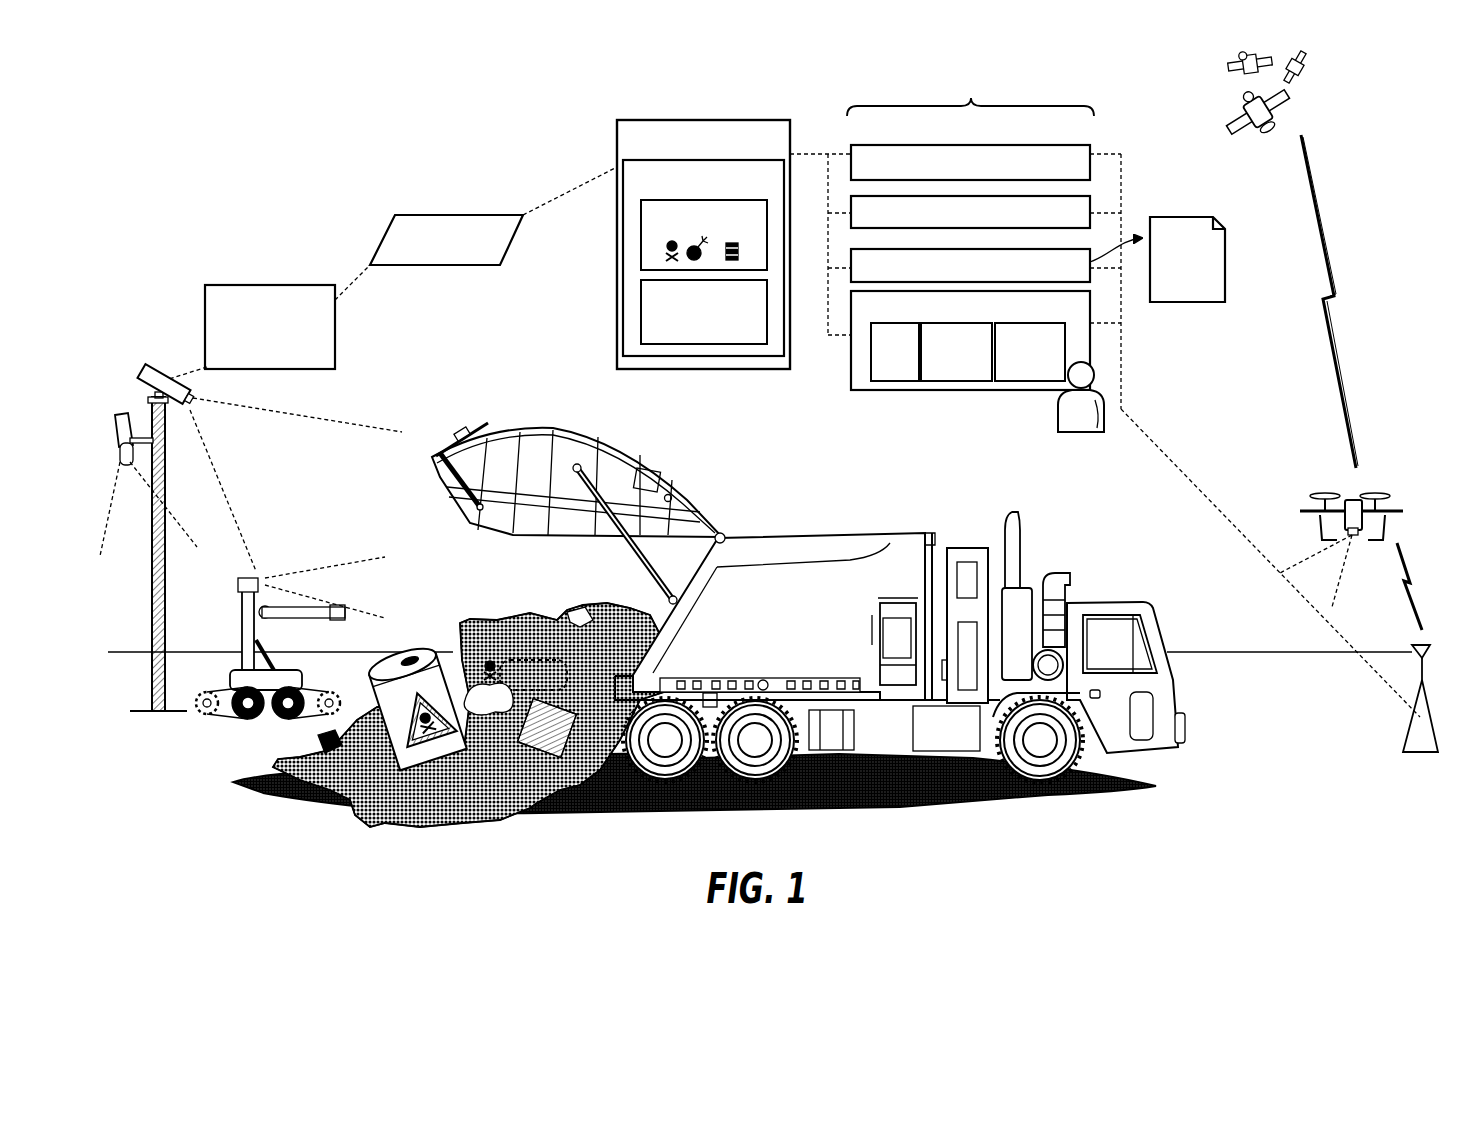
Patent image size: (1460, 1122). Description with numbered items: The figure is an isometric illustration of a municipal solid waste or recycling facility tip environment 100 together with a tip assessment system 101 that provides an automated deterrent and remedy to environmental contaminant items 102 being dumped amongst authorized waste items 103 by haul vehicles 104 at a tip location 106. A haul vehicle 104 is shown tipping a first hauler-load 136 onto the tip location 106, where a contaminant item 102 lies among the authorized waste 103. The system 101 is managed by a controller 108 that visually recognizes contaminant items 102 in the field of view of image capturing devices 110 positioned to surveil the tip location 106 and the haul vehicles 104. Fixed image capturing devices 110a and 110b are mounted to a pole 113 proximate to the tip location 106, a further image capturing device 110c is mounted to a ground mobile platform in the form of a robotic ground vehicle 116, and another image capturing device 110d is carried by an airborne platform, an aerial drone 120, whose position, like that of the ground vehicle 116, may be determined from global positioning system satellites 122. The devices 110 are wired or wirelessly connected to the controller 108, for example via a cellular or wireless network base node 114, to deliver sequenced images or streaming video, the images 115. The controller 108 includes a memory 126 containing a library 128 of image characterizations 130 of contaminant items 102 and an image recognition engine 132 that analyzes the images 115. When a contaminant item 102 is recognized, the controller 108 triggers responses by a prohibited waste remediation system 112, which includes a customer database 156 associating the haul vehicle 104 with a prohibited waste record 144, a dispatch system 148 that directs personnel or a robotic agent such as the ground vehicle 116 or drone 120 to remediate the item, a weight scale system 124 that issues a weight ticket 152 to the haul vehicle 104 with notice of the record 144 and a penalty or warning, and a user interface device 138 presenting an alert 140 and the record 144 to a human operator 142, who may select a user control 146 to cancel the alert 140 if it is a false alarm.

The municipal solid waste or recycling facility tip environment 100 is at (1242, 696).
The tip assessment system 101 is at (496, 180).
The environmental contaminant item 102 is at (393, 657).
The authorized waste item 103 is at (490, 710).
The haul vehicle 104 is at (1110, 602).
The municipal solid waste or recycling facility tip location 106 is at (900, 802).
The controller 108 is at (703, 244).
The image capturing devices 110 is at (269, 322).
The image capturing device 110a is at (155, 372).
The image capturing device 110b is at (117, 414).
The image capturing device 110c is at (262, 588).
The image capturing device 110d is at (1355, 537).
The prohibited waste remediation system 112 is at (1105, 386).
The pole 113 is at (151, 612).
The cellular or wireless network base node 114 is at (1420, 715).
The images 115 is at (493, 216).
The robotic ground vehicle 116 is at (243, 722).
The aerial drone 120 is at (1325, 529).
The global positioning system satellites 122 is at (1320, 78).
The weight scale system 124 is at (970, 265).
The memory 126 is at (703, 258).
The library 128 is at (704, 235).
The image characterizations 130 is at (650, 253).
The image recognition engine 132 is at (704, 312).
The first hauler-load 136 is at (507, 620).
The user interface device 138 is at (970, 340).
The alert 140 is at (895, 352).
The human operator 142 is at (1058, 410).
The prohibited waste record 144 is at (956, 352).
The user control 146 is at (1030, 352).
The dispatch system 148 is at (970, 212).
The weight ticket 152 is at (1157, 259).
The customer database 156 is at (970, 162).